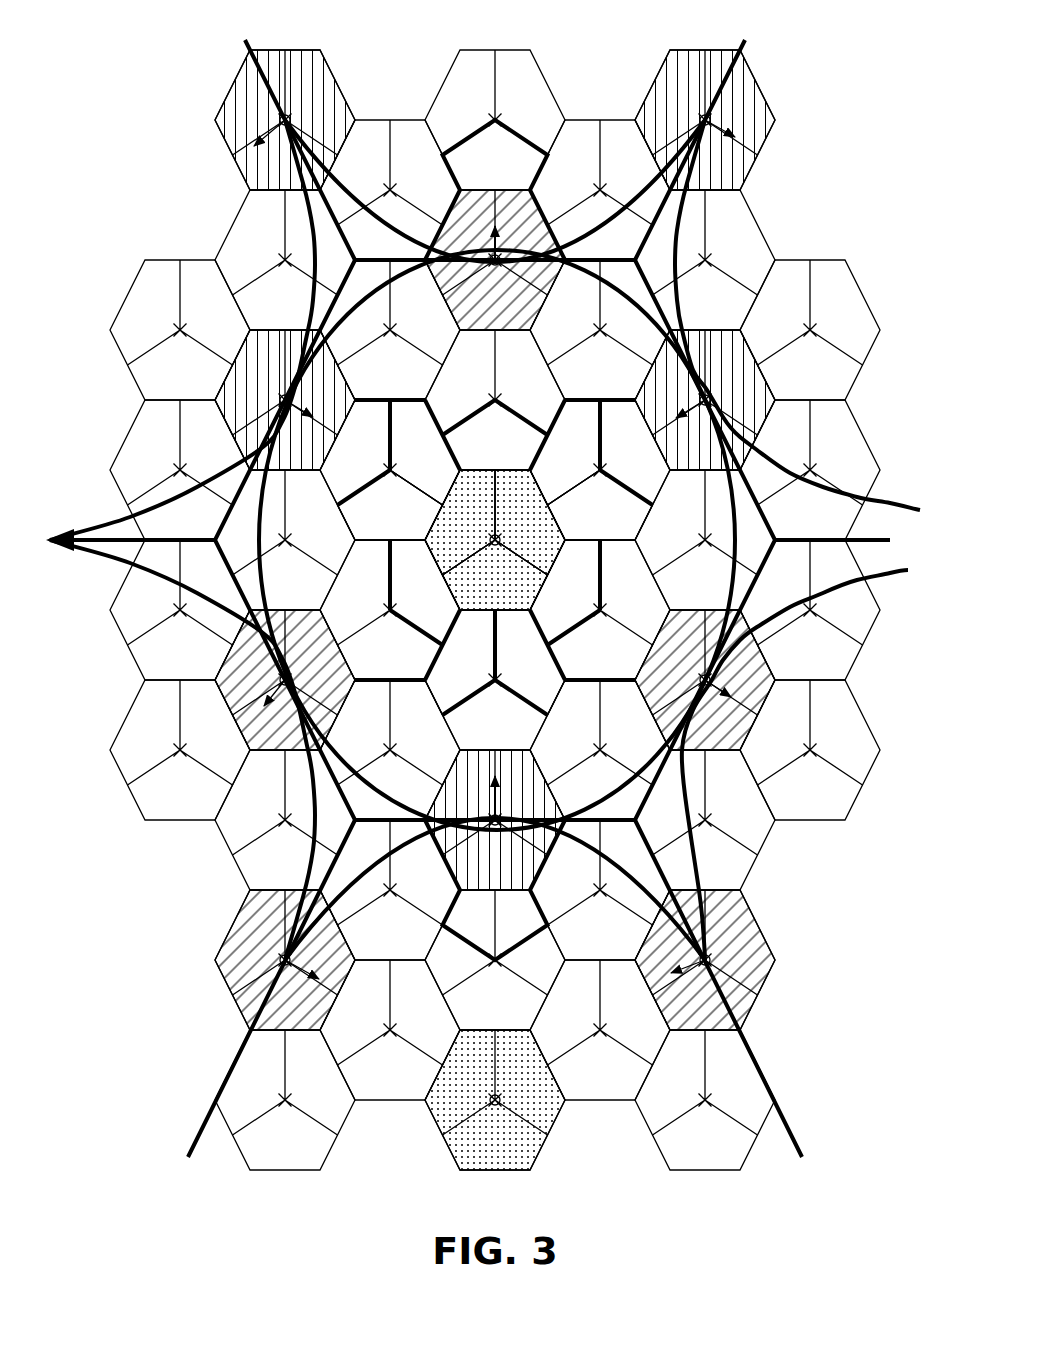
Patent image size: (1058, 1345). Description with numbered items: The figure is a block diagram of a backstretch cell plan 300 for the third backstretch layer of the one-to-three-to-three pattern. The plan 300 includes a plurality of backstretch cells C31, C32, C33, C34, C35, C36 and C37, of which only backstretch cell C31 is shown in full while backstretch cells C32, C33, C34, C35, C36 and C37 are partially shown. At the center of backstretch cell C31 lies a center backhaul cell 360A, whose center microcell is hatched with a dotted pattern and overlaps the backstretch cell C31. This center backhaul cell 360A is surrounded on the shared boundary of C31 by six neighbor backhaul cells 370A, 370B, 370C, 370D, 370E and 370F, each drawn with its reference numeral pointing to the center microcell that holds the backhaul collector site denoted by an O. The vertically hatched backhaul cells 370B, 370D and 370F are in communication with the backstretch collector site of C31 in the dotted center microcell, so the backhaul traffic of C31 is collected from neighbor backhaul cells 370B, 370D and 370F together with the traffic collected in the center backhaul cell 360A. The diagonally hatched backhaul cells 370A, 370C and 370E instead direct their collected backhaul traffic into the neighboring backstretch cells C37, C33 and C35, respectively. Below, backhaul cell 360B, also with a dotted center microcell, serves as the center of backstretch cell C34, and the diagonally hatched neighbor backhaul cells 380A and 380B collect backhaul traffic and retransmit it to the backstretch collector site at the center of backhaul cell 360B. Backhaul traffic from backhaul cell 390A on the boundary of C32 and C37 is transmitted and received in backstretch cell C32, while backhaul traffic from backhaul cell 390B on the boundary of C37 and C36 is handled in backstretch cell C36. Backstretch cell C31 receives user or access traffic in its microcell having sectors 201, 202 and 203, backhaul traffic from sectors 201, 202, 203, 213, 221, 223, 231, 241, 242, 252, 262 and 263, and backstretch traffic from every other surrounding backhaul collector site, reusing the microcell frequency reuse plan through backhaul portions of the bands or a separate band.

The backstretch cell plan 300 is at (835, 74).
The backhaul cell 390A is at (766, 133).
The backhaul cell 390B is at (242, 97).
The neighbor backhaul cell 370A is at (513, 186).
The neighbor backhaul cell 370B is at (766, 370).
The neighbor backhaul cell 370C is at (769, 660).
The neighbor backhaul cell 370D is at (514, 867).
The neighbor backhaul cell 370E is at (219, 663).
The neighbor backhaul cell 370F is at (224, 372).
The center backhaul cell 360A is at (548, 533).
The backhaul cell 360B is at (528, 1141).
The neighbor backhaul cell 380A is at (748, 949).
The neighbor backhaul cell 380B is at (236, 933).
The sector 201 is at (460, 522).
The sector 202 is at (530, 522).
The sector 203 is at (495, 575).
The sector 213 is at (495, 435).
The sector 221 is at (565, 452).
The sector 223 is at (600, 505).
The sector 231 is at (565, 592).
The sector 241 is at (460, 662).
The sector 242 is at (530, 662).
The sector 252 is at (425, 592).
The sector 262 is at (425, 452).
The sector 263 is at (390, 505).
The backstretch cell C31 is at (392, 718).
The backstretch cell C32 is at (819, 220).
The backstretch cell C33 is at (779, 902).
The backstretch cell C34 is at (394, 1137).
The backstretch cell C35 is at (177, 890).
The backstretch cell C36 is at (184, 220).
The backstretch cell C37 is at (394, 68).